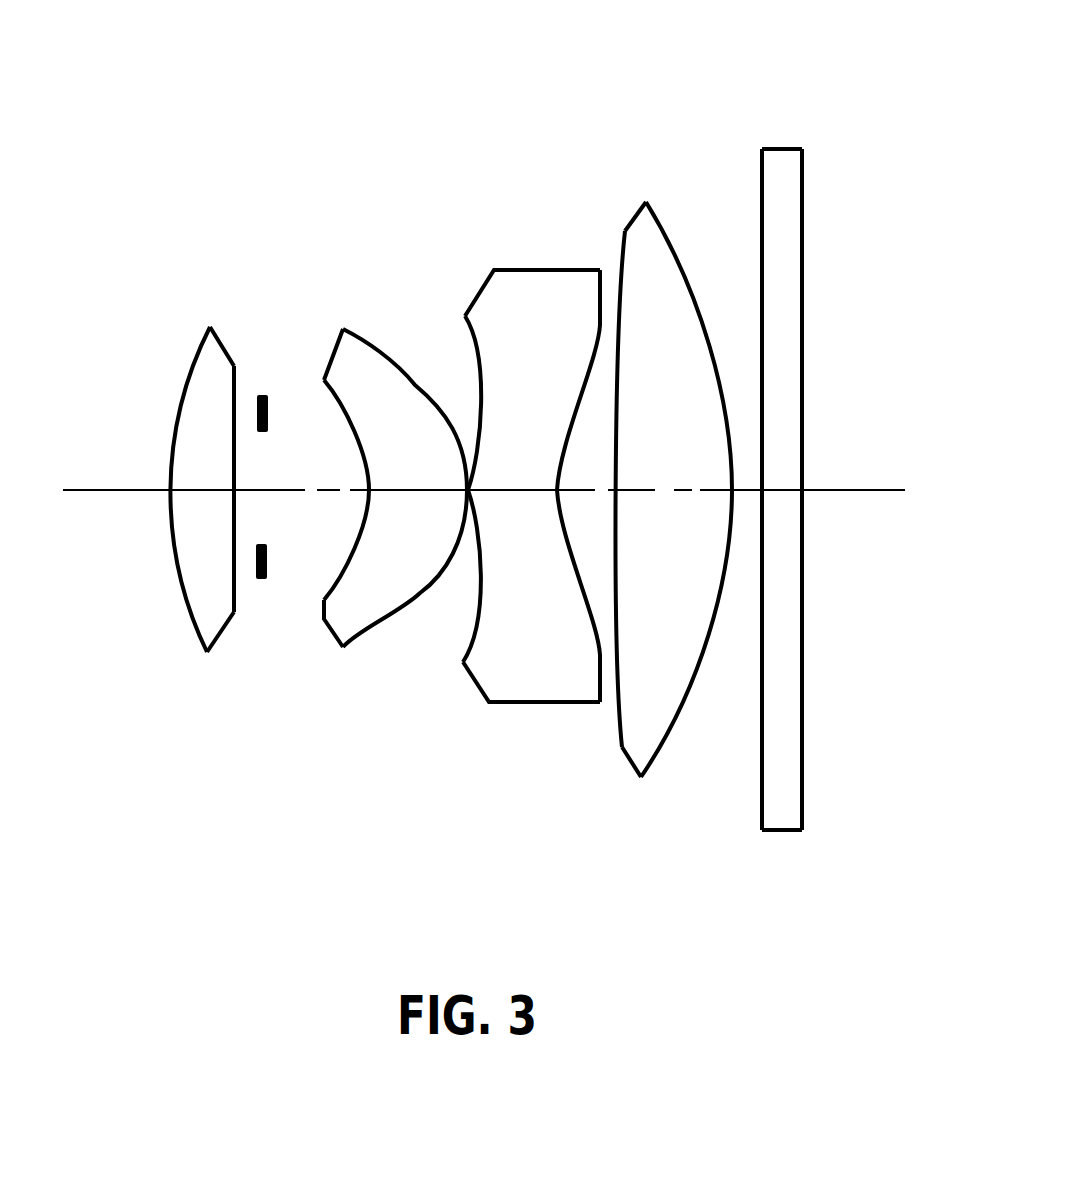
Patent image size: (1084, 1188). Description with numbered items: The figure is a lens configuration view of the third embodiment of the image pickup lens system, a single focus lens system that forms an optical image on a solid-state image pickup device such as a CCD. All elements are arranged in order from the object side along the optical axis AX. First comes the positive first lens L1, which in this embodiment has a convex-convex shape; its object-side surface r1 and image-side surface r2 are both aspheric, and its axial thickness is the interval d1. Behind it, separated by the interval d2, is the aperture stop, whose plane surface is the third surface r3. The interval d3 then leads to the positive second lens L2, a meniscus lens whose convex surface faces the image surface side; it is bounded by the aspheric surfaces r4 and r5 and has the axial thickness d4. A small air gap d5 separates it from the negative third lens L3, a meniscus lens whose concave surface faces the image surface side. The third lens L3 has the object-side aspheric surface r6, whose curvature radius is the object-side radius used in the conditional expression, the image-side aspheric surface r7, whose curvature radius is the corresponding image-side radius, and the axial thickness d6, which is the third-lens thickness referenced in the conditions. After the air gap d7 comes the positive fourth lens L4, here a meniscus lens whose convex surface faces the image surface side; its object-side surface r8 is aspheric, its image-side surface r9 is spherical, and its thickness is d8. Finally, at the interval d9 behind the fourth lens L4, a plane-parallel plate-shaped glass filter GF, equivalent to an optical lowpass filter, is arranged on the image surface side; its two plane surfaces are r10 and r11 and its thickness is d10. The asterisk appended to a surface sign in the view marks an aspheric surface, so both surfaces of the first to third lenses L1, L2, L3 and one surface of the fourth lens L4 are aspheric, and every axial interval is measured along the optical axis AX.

The first surface r1 is at (184, 397).
The second surface r2 is at (236, 393).
The third surface r3 is at (260, 404).
The fourth surface r4 is at (324, 392).
The fifth surface r5 is at (380, 358).
The sixth surface r6 is at (480, 368).
The seventh surface r7 is at (596, 336).
The eighth surface r8 is at (623, 270).
The ninth surface r9 is at (676, 250).
The tenth surface r10 is at (763, 190).
The eleventh surface r11 is at (803, 190).
The first axial surface interval d1 is at (200, 488).
The second axial surface interval d2 is at (246, 492).
The third axial surface interval d3 is at (315, 464).
The fourth axial surface interval d4 is at (418, 463).
The fifth axial surface interval d5 is at (466, 542).
The sixth axial surface interval d6 is at (529, 491).
The seventh axial surface interval d7 is at (583, 491).
The eighth axial surface interval d8 is at (672, 463).
The ninth axial surface interval d9 is at (745, 494).
The tenth axial surface interval d10 is at (783, 491).
The first lens L1 is at (148, 496).
The second lens L2 is at (350, 453).
The third lens L3 is at (435, 409).
The fourth lens L4 is at (639, 453).
The glass filter GF is at (805, 430).
The optical axis AX is at (853, 491).